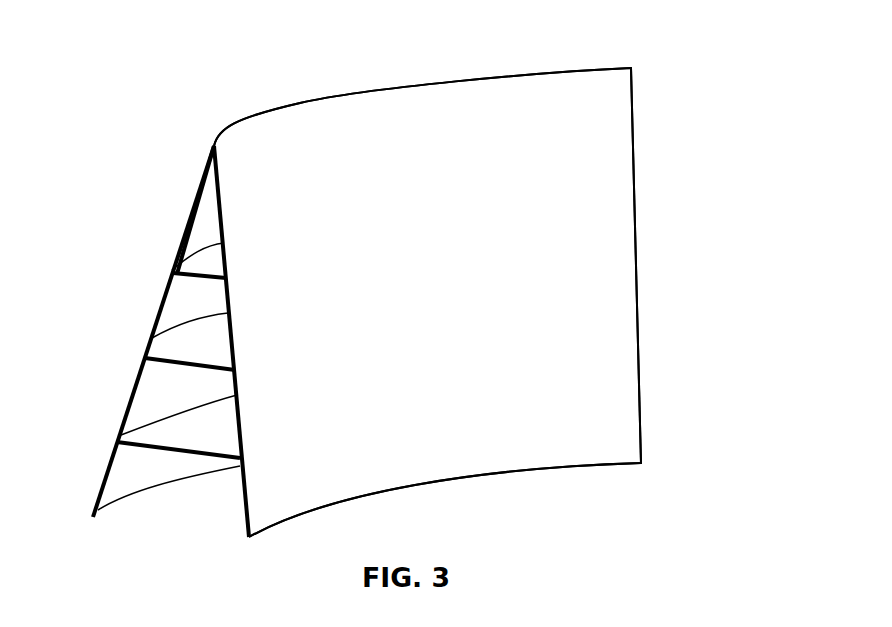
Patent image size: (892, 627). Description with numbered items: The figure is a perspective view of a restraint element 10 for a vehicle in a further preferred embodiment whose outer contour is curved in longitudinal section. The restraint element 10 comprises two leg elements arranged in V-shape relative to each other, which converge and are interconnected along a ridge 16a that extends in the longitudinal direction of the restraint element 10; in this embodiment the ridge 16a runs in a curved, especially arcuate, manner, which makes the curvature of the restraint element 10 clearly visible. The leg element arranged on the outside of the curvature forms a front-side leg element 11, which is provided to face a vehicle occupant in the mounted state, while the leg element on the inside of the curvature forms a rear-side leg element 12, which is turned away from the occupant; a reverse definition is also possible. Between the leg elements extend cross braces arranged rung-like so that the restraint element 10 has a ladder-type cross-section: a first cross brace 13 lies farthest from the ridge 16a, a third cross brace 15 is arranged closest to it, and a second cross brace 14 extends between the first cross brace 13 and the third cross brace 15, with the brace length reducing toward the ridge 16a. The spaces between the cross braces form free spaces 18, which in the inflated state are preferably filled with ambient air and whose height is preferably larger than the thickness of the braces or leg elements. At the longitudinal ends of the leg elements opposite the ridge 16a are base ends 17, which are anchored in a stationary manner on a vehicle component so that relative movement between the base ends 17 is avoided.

The restraint element 10 is at (685, 102).
The front-side leg element 11 is at (157, 323).
The rear-side leg element 12 is at (565, 290).
The first cross brace 13 is at (192, 442).
The second cross brace 14 is at (204, 354).
The third cross brace 15 is at (203, 260).
The ridge 16a is at (302, 101).
The base ends 17 is at (498, 473).
The free spaces 18 is at (207, 223).